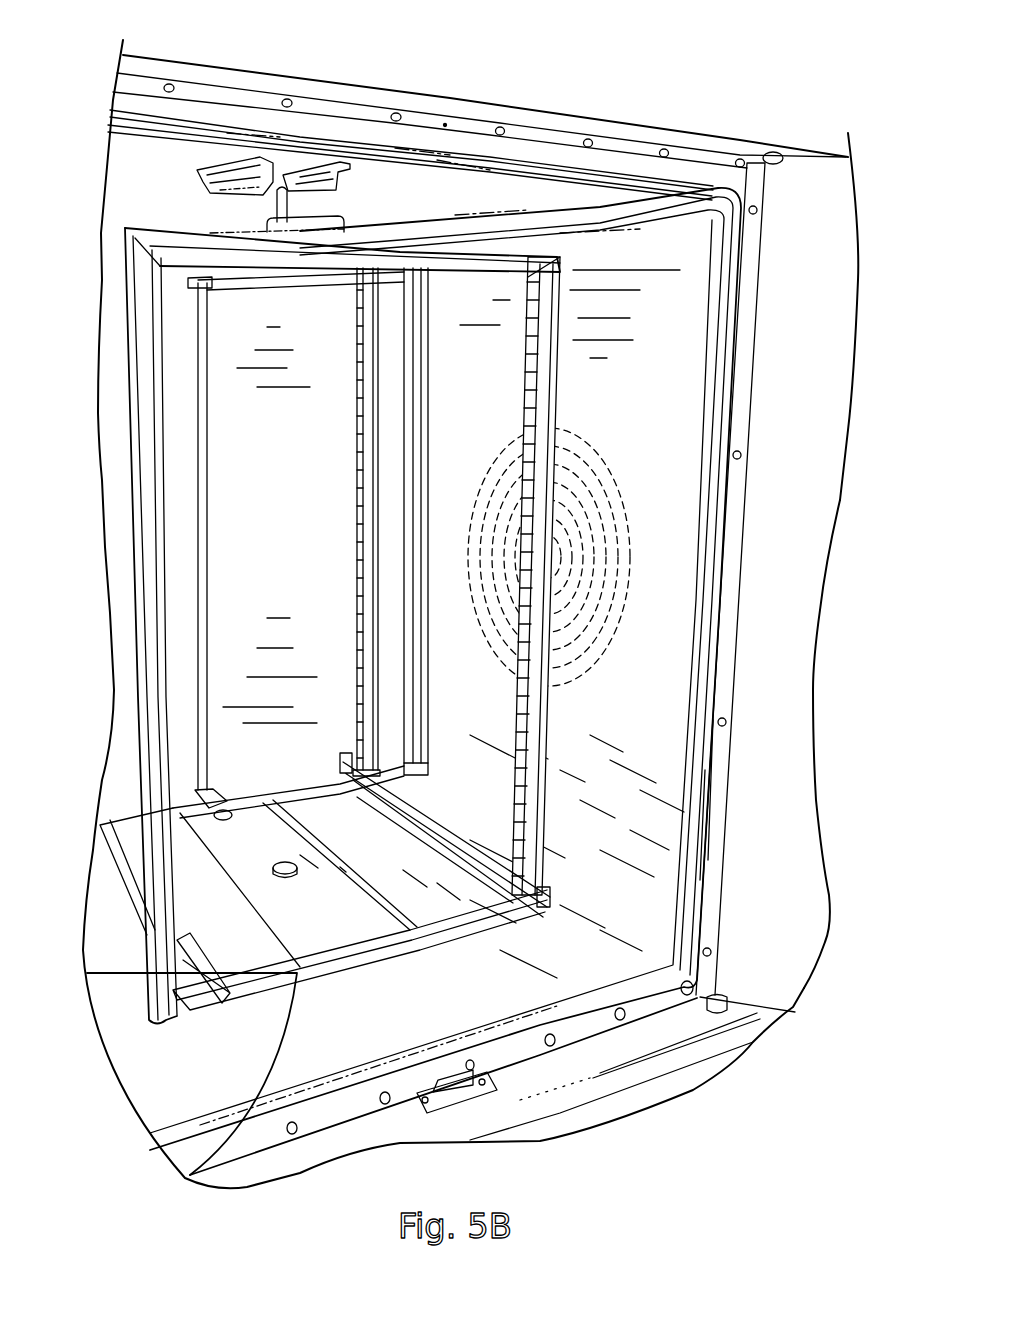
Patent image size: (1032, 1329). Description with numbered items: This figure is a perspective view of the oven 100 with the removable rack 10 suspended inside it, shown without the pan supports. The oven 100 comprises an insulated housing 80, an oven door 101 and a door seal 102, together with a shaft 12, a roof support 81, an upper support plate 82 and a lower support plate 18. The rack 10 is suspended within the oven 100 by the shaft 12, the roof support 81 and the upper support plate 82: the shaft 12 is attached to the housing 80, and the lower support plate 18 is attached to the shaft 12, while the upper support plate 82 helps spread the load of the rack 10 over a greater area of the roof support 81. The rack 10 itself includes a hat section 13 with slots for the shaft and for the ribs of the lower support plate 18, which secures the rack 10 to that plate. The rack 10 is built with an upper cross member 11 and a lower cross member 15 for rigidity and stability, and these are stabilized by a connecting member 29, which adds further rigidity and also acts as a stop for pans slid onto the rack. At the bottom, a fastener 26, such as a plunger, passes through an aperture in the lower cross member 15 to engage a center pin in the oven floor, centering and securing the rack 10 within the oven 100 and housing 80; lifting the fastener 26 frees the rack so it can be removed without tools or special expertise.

The rack 10 is at (190, 1174).
The upper cross member 11 is at (410, 222).
The shaft 12 is at (267, 193).
The hat section 13 is at (333, 213).
The lower cross member 15 is at (307, 913).
The lower support plate 18 is at (352, 222).
The fastener 26 is at (297, 874).
The connecting member 29 is at (197, 630).
The oven housing 80 is at (160, 1073).
The roof support 81 is at (275, 183).
The upper support plate 82 is at (318, 170).
The oven 100 is at (770, 657).
The oven door 101 is at (790, 459).
The door seal 102 is at (725, 192).